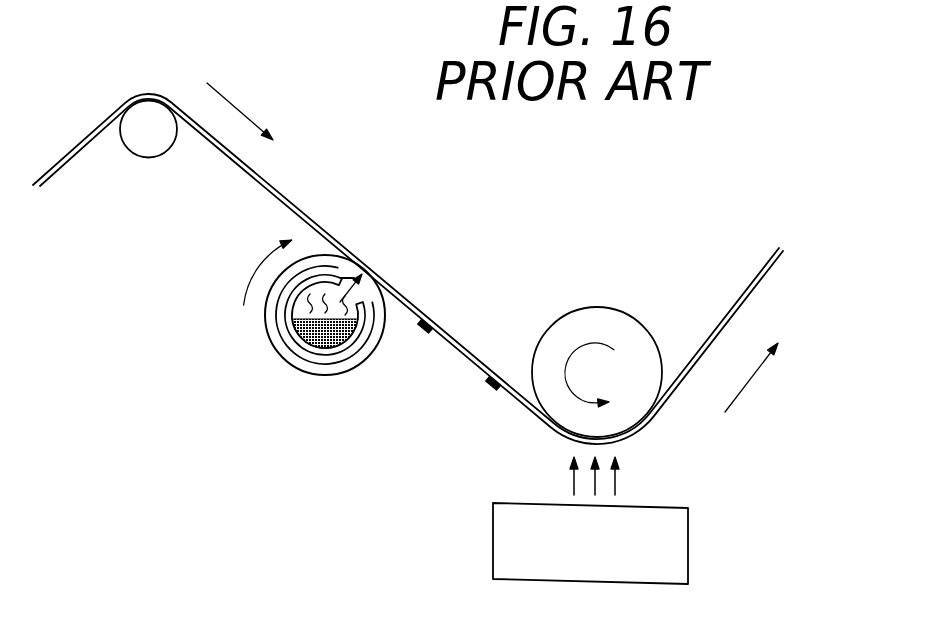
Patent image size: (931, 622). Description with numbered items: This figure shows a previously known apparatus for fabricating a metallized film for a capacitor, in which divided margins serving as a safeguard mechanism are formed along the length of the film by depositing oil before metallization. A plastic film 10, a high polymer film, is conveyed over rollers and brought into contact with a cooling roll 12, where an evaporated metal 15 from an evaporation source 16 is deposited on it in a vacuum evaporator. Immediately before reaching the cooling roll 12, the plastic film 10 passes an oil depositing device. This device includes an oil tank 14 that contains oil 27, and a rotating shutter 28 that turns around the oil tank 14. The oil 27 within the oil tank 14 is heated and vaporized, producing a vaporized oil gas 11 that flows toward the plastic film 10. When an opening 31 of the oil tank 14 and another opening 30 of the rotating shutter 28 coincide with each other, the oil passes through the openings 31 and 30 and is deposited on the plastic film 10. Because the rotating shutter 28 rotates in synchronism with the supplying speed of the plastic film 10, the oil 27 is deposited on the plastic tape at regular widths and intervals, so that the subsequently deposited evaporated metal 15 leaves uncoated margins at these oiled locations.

The plastic film 10 is at (92, 132).
The vaporized oil gas 11 is at (363, 290).
The cooling roll 12 is at (620, 311).
The oil tank 14 is at (287, 330).
The evaporated metal 15 is at (623, 482).
The evaporation source 16 is at (688, 547).
The oil 27 is at (336, 348).
The rotating shutter 28 is at (297, 370).
The opening of the rotating shutter 30 is at (368, 281).
The opening of the oil tank 31 is at (343, 273).